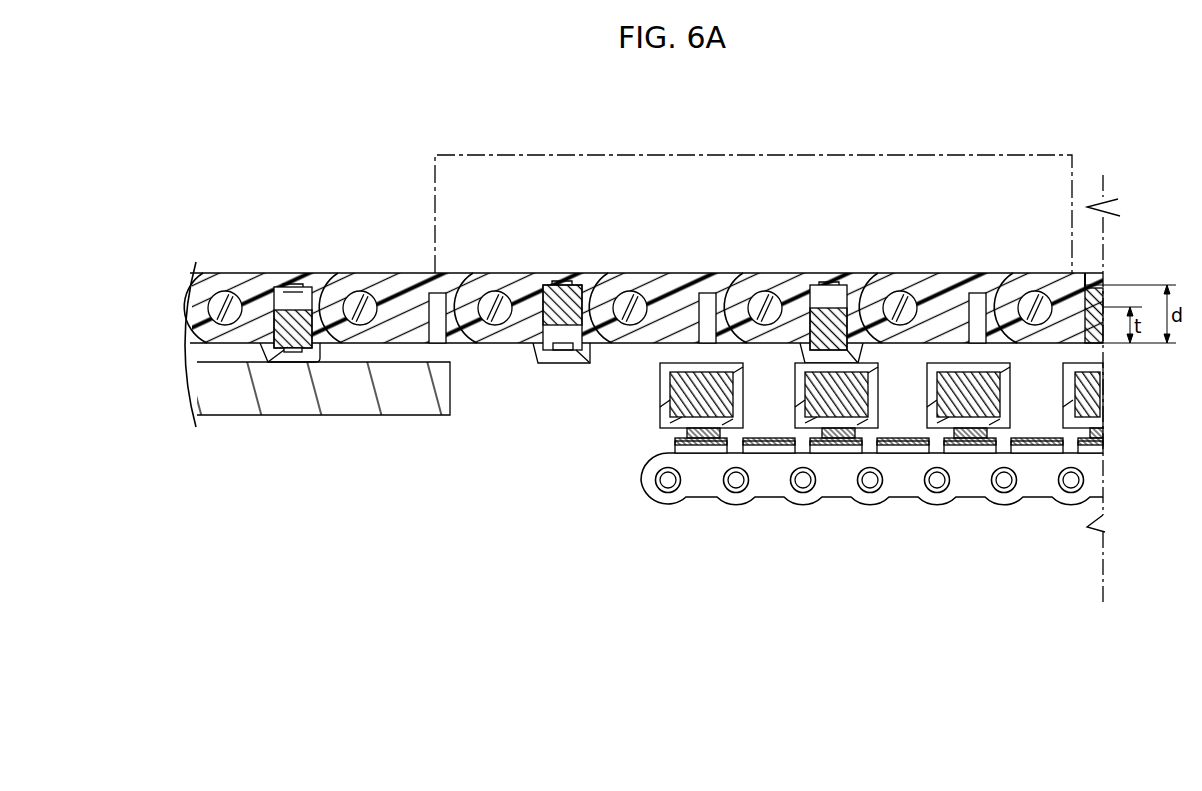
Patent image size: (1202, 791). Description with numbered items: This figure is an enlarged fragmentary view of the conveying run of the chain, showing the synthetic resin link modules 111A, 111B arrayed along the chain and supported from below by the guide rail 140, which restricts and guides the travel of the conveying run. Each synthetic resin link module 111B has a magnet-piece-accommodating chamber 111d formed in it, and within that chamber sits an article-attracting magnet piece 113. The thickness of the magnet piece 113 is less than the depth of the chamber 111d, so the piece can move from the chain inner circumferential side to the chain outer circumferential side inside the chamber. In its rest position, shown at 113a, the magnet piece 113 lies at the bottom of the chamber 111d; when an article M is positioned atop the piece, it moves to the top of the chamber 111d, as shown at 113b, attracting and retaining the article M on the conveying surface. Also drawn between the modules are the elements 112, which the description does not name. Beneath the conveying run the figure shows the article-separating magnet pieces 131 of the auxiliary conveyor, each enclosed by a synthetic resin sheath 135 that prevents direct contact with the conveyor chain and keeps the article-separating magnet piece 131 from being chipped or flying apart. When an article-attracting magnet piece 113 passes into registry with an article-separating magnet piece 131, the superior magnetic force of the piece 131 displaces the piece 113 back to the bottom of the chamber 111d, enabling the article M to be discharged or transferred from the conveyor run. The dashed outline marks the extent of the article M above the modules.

The synthetic resin link module 111A is at (417, 281).
The synthetic resin link module 111B is at (257, 281).
The magnet-piece-accommodating chamber 111d is at (296, 292).
The roller 112 is at (360, 300).
The article-attracting magnet piece 113 is at (832, 300).
The rest position of the article-attracting magnet piece 113a is at (297, 352).
The raised position of the article-attracting magnet piece 113b is at (562, 296).
The article-separating magnet piece 131 is at (673, 387).
The synthetic resin sheath 135 is at (662, 410).
The guide rail 140 is at (385, 393).
The article M is at (880, 153).